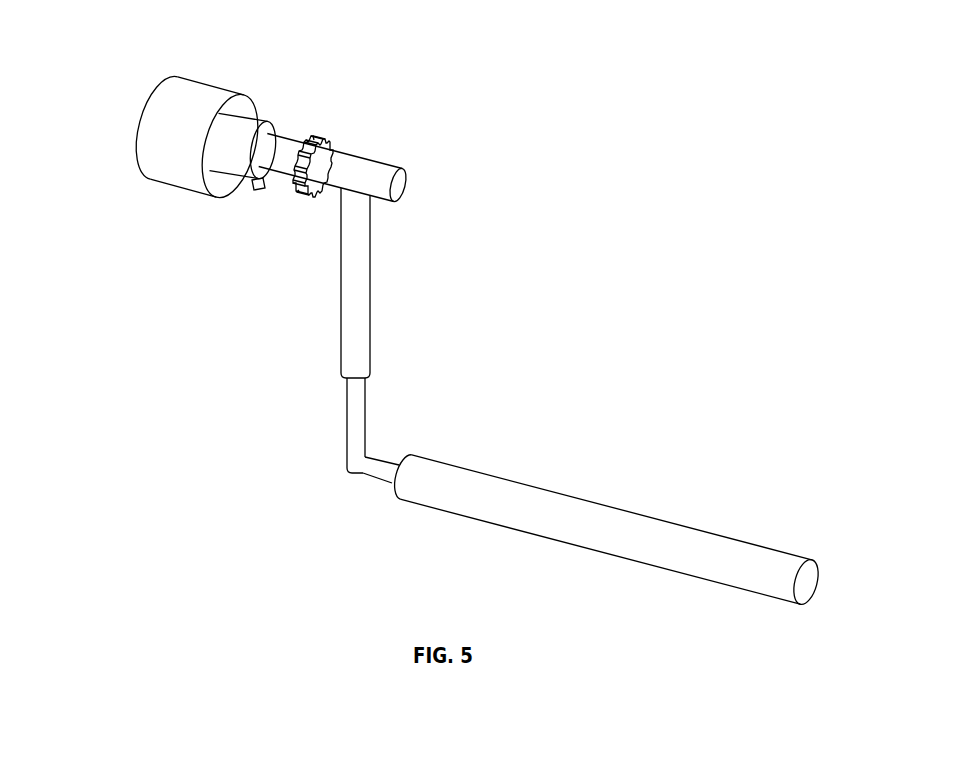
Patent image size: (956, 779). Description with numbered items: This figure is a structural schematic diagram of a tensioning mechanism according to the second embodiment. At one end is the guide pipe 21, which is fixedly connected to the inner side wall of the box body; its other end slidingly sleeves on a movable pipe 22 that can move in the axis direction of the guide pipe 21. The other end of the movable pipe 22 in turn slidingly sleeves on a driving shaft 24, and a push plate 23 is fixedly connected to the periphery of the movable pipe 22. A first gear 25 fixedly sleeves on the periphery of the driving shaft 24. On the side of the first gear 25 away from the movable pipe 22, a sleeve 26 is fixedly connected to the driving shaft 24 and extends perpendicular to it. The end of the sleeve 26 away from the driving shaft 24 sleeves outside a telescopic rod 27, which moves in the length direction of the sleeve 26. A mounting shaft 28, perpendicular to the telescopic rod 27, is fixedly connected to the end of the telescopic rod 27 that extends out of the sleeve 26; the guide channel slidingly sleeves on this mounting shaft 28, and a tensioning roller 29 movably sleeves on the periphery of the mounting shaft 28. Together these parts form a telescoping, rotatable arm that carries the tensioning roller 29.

The guide pipe 21 is at (172, 133).
The movable pipe 22 is at (250, 133).
The push plate 23 is at (263, 188).
The driving shaft 24 is at (400, 168).
The first gear 25 is at (315, 150).
The sleeve 26 is at (358, 313).
The telescopic rod 27 is at (363, 430).
The mounting shaft 28 is at (388, 470).
The tensioning roller 29 is at (515, 495).